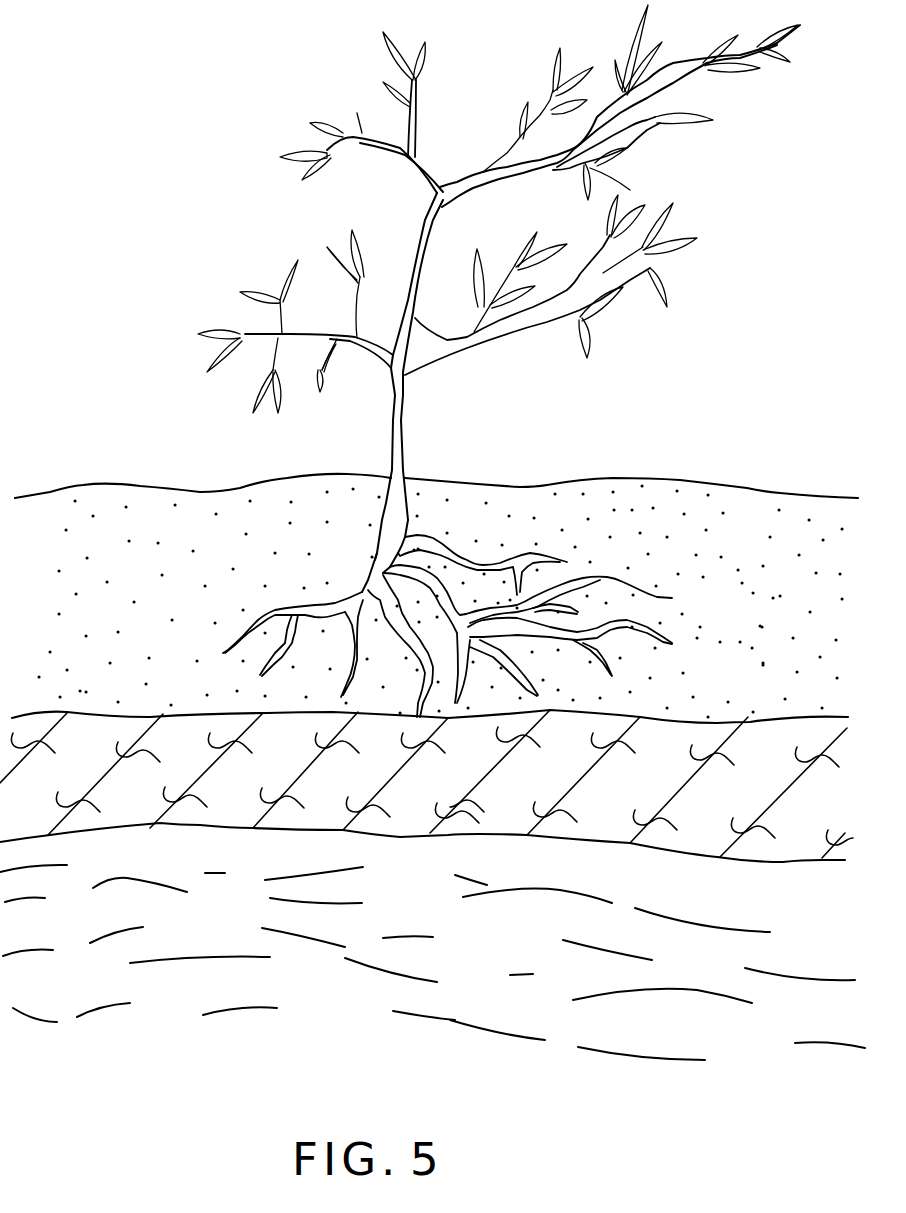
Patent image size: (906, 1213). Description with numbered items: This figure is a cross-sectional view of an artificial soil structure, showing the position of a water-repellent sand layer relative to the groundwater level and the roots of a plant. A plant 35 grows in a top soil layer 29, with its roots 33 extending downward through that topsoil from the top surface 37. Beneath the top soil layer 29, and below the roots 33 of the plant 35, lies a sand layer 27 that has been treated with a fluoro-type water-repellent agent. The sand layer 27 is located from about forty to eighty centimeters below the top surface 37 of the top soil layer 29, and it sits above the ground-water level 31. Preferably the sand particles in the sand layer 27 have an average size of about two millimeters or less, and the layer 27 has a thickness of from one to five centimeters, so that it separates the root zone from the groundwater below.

The sand layer 27 is at (585, 790).
The top soil layer 29 is at (715, 588).
The ground-water level 31 is at (442, 927).
The roots 33 is at (360, 573).
The plant 35 is at (393, 231).
The top surface 37 is at (113, 480).